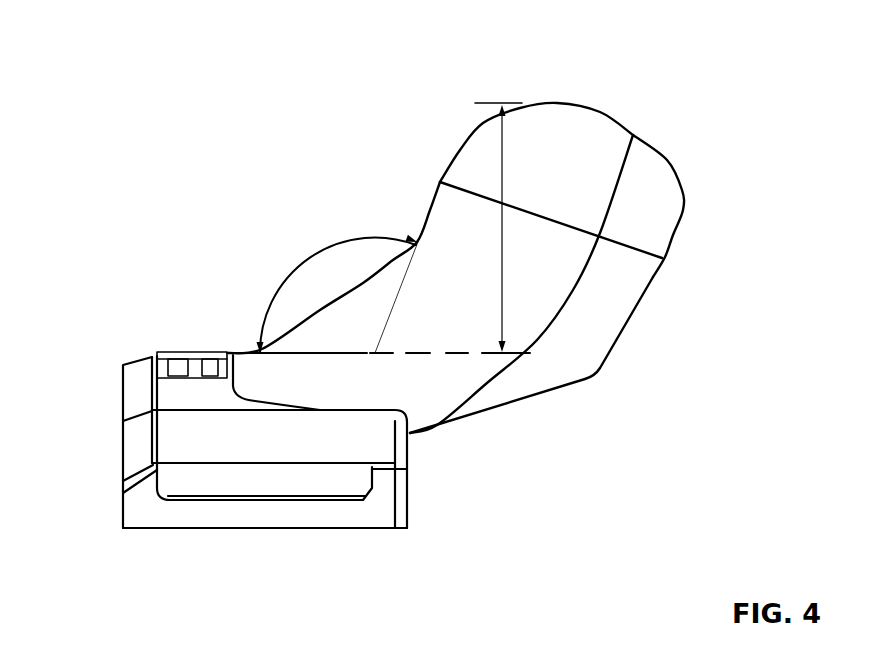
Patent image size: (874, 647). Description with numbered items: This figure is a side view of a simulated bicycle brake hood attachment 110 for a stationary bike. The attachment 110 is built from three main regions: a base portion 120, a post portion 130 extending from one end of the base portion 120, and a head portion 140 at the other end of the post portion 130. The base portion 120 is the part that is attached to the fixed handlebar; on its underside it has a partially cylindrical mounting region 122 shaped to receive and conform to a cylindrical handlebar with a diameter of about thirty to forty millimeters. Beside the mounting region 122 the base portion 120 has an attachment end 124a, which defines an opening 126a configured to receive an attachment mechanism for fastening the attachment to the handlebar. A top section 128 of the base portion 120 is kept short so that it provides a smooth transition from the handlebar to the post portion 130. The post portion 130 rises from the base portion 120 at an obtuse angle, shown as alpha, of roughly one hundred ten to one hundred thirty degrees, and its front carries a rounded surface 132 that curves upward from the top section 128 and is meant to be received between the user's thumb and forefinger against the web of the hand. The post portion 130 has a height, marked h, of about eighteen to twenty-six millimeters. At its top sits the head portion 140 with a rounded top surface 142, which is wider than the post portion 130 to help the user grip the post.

The simulated bicycle brake hood attachment 110 is at (173, 136).
The base portion 120 is at (112, 438).
The partially cylindrical mounting region 122 is at (413, 434).
The attachment end 124a is at (250, 518).
The opening 126a is at (175, 485).
The top section 128 is at (162, 347).
The post portion 130 is at (378, 190).
The rounded surface 132 is at (363, 298).
The head portion 140 is at (454, 103).
The rounded top surface 142 is at (572, 105).